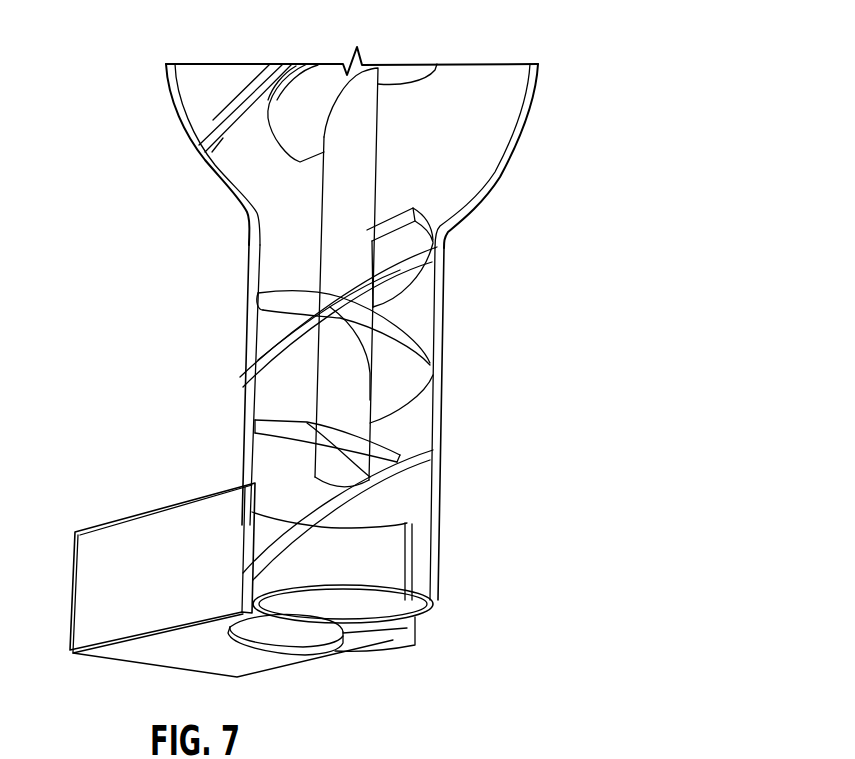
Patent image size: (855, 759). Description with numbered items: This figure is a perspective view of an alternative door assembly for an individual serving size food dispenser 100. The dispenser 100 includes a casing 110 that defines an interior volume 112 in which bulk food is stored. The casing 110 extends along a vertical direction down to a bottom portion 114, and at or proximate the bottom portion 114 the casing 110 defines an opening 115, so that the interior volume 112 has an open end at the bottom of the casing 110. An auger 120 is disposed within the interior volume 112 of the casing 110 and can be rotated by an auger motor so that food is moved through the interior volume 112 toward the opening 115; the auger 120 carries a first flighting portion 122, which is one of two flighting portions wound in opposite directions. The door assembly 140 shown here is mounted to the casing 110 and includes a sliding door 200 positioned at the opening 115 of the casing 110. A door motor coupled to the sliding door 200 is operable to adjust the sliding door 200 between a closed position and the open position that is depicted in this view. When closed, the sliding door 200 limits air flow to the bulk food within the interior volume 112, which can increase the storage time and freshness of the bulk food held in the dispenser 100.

The individual serving size food dispenser 100 is at (148, 156).
The casing 110 is at (277, 253).
The interior volume 112 is at (464, 102).
The bottom portion 114 is at (452, 541).
The opening 115 is at (448, 604).
The auger 120 is at (363, 170).
The first flighting portion 122 is at (393, 291).
The door assembly 140 is at (236, 593).
The sliding door 200 is at (285, 626).